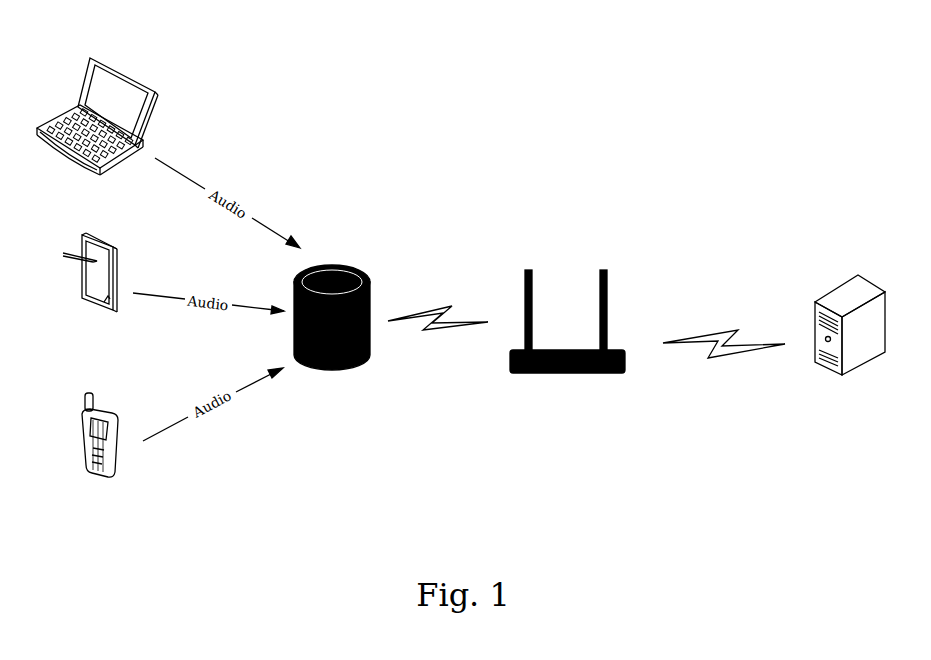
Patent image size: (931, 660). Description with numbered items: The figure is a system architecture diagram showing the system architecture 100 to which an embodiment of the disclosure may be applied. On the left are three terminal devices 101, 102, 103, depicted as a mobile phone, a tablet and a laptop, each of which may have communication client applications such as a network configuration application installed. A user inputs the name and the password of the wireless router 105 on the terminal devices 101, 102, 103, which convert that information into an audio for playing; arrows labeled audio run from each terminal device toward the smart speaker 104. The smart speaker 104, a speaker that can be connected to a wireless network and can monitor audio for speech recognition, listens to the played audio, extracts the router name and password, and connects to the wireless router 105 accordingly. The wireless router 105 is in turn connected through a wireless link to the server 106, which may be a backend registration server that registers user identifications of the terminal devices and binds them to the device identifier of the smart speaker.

The system architecture 100 is at (846, 29).
The terminal device 101 is at (100, 448).
The terminal device 102 is at (90, 286).
The terminal device 103 is at (97, 131).
The smart speaker 104 is at (332, 346).
The wireless router 105 is at (567, 349).
The server 106 is at (850, 352).